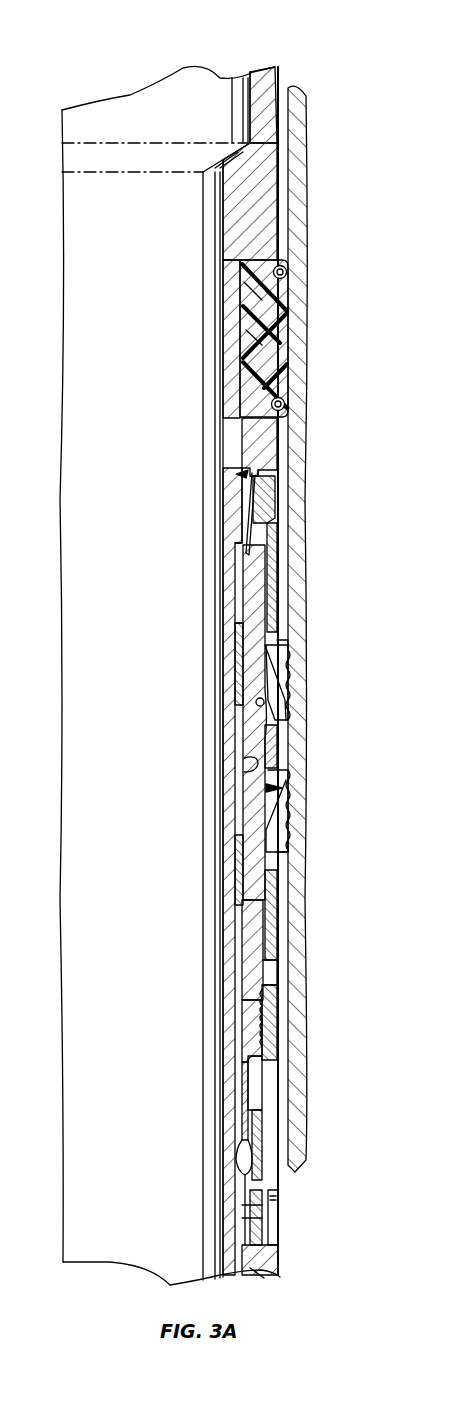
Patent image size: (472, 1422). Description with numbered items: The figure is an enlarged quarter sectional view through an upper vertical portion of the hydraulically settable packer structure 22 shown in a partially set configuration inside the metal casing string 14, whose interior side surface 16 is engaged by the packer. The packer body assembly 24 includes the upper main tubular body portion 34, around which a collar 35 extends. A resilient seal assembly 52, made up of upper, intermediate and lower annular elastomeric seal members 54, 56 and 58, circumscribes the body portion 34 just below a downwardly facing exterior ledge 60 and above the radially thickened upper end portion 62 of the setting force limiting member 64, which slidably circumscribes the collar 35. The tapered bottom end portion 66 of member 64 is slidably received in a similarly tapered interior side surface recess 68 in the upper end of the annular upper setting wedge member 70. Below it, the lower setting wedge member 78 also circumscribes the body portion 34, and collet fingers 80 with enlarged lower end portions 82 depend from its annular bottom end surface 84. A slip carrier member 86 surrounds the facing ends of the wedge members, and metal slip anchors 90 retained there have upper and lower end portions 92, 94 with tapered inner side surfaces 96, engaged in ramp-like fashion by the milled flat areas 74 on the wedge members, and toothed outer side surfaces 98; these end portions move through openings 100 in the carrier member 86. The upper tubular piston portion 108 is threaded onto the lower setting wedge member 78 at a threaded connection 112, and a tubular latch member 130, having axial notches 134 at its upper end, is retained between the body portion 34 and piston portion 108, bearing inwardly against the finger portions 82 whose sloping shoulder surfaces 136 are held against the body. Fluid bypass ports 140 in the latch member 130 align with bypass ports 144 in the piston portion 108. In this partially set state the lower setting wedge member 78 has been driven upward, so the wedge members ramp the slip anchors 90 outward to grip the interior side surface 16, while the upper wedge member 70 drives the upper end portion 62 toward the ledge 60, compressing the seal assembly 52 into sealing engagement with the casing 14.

The packer structure 22 is at (160, 66).
The interior side surface 16 is at (260, 100).
The tubular packer body assembly 24 is at (276, 132).
The casing string 14 is at (300, 172).
The upper main tubular body portion 34 is at (245, 236).
The collar 35 is at (232, 640).
The resilient seal assembly 52 is at (286, 308).
The upper annular elastomeric seal member 54 is at (246, 290).
The intermediate annular elastomeric seal member 56 is at (246, 346).
The lower annular elastomeric seal member 58 is at (246, 394).
The exterior ledge 60 is at (243, 266).
The upper end portion 62 is at (262, 452).
The setting force limiting member 64 is at (240, 474).
The bottom end portion 66 is at (240, 522).
The interior side surface recess 68 is at (264, 545).
The upper setting wedge member 70 is at (250, 594).
The milled flat areas 74 is at (256, 700).
The lower setting wedge member 78 is at (256, 938).
The collet fingers 80 is at (248, 1110).
The enlarged lower end portions 82 is at (240, 1170).
The bottom end surface 84 is at (252, 1066).
The slip carrier member 86 is at (280, 600).
The slip anchors 90 is at (268, 788).
The upper end portion 92 is at (286, 680).
The lower end portion 94 is at (282, 806).
The tapered inner side surfaces 96 is at (240, 664).
The toothed outer side surfaces 98 is at (292, 712).
The openings 100 is at (280, 656).
The upper tubular piston portion 108 is at (270, 1258).
The threaded connection 112 is at (268, 1018).
The tubular latch member 130 is at (262, 1272).
The axial notches 134 is at (260, 1078).
The sloping shoulder surfaces 136 is at (240, 1152).
The fluid bypass ports 140 is at (313, 1209).
The fluid bypass ports 144 is at (280, 1218).